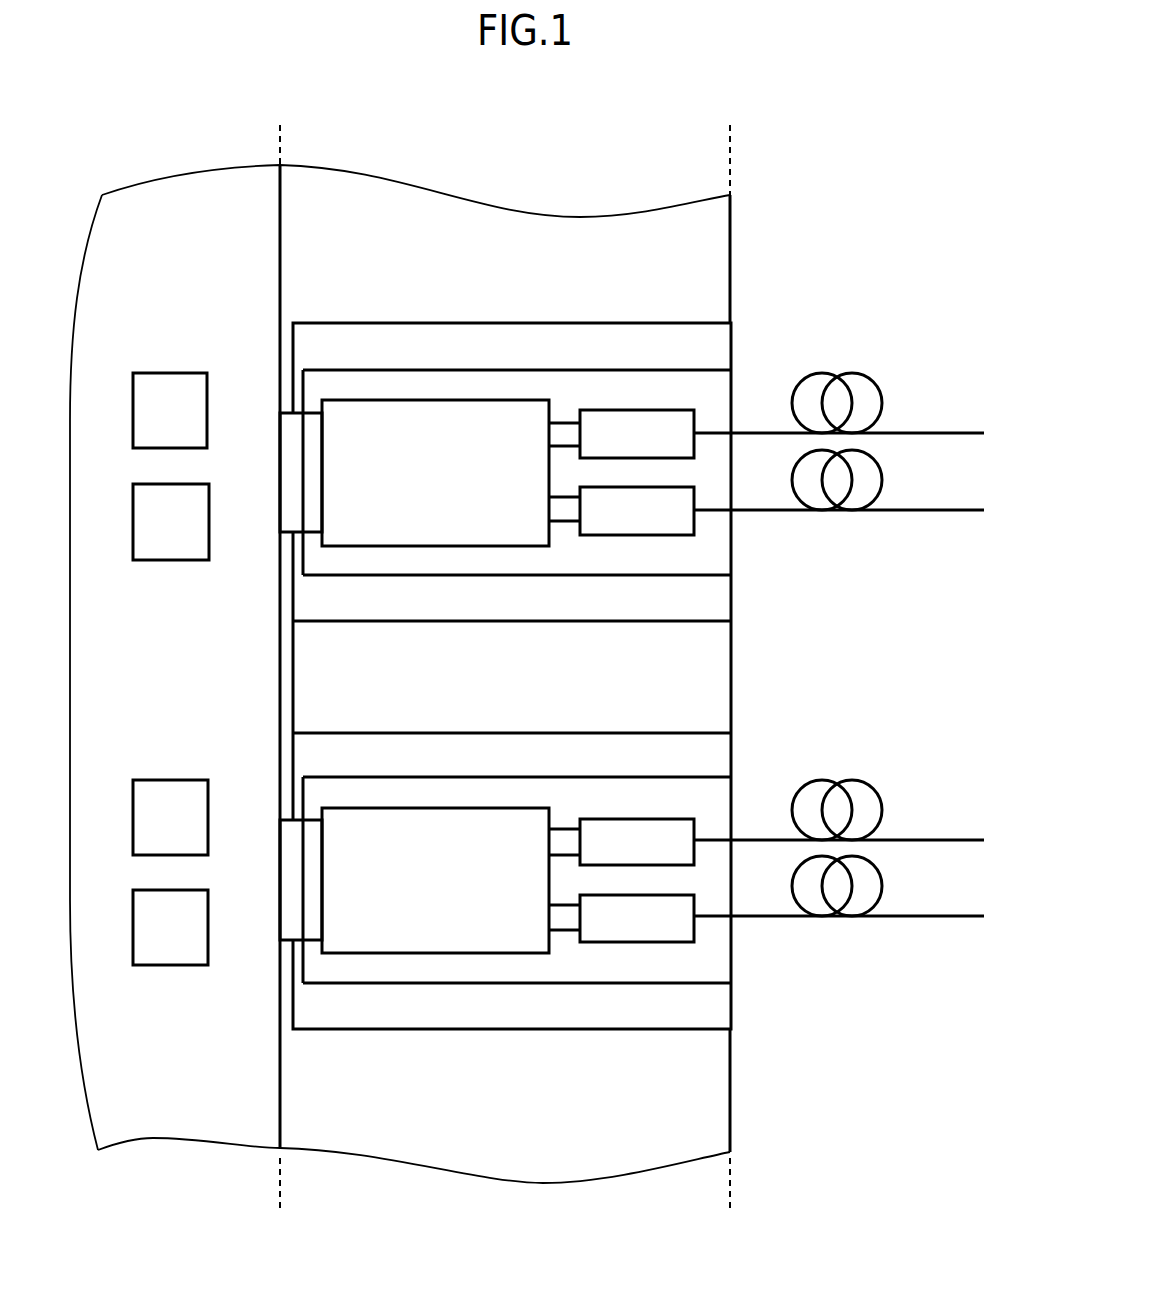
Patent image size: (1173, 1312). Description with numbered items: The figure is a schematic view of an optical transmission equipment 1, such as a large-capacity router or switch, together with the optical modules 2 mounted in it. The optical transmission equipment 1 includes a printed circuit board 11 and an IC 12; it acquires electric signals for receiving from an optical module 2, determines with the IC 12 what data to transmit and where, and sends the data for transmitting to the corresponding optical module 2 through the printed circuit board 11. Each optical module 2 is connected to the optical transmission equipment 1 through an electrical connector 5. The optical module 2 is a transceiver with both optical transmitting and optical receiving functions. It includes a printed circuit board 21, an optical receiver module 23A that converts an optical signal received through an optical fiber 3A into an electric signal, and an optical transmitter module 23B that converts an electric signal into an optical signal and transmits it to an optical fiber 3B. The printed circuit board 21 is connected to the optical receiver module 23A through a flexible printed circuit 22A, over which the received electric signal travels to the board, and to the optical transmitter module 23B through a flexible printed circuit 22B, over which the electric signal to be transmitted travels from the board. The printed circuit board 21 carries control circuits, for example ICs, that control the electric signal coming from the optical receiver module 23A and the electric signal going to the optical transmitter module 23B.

The optical transmission equipment 1 is at (732, 678).
The optical module 2 is at (735, 540).
The optical fiber 3A is at (880, 464).
The optical fiber 3B is at (880, 386).
The electrical connector 5 is at (313, 517).
The printed circuit board 11 is at (232, 1061).
The IC 12 is at (180, 373).
The printed circuit board 21 is at (480, 533).
The flexible printed circuit 22A is at (565, 515).
The flexible printed circuit 22B is at (565, 430).
The optical receiver module 23A is at (610, 523).
The optical transmitter module 23B is at (610, 422).